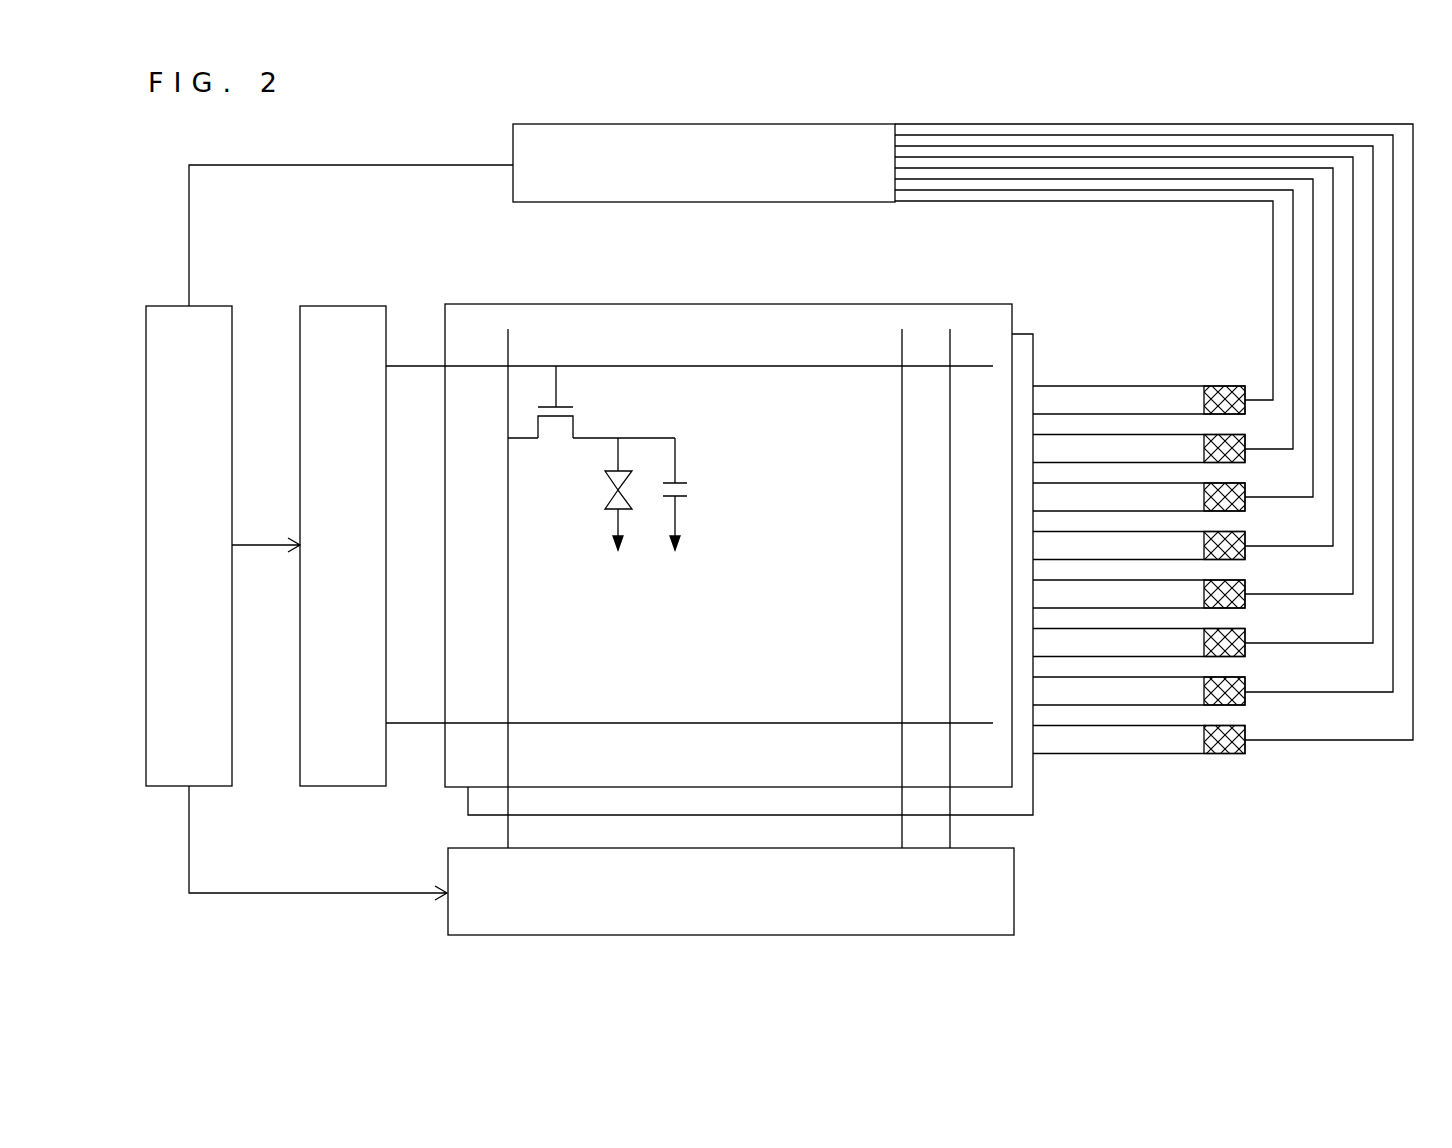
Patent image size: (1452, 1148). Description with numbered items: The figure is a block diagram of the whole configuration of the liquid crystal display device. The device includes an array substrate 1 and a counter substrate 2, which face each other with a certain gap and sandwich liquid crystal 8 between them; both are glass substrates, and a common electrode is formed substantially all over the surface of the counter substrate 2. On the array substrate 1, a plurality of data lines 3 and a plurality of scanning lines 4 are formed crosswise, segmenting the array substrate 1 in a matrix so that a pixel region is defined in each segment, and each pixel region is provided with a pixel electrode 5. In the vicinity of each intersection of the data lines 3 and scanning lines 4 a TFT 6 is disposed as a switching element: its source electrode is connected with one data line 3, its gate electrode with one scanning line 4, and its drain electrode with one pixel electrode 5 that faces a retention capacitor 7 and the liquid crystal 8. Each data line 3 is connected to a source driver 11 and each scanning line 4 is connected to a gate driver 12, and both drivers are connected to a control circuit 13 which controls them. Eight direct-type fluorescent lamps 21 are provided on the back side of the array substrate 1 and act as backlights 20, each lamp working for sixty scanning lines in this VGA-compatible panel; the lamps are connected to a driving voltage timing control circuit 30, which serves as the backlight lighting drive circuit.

The array substrate 1 is at (1025, 356).
The counter substrate 2 is at (1004, 314).
The data line 3 is at (508, 352).
The scanning line 4 is at (665, 366).
The pixel electrode 5 is at (648, 438).
The TFT 6 is at (577, 425).
The retention capacitor 7 is at (688, 498).
The liquid crystal 8 is at (612, 497).
The source driver 11 is at (1017, 888).
The gate driver 12 is at (340, 306).
The control circuit 13 is at (218, 306).
The backlight 20 is at (1181, 386).
The direct-type fluorescent lamp 21 is at (1141, 393).
The driving voltage timing control circuit 30 is at (786, 124).